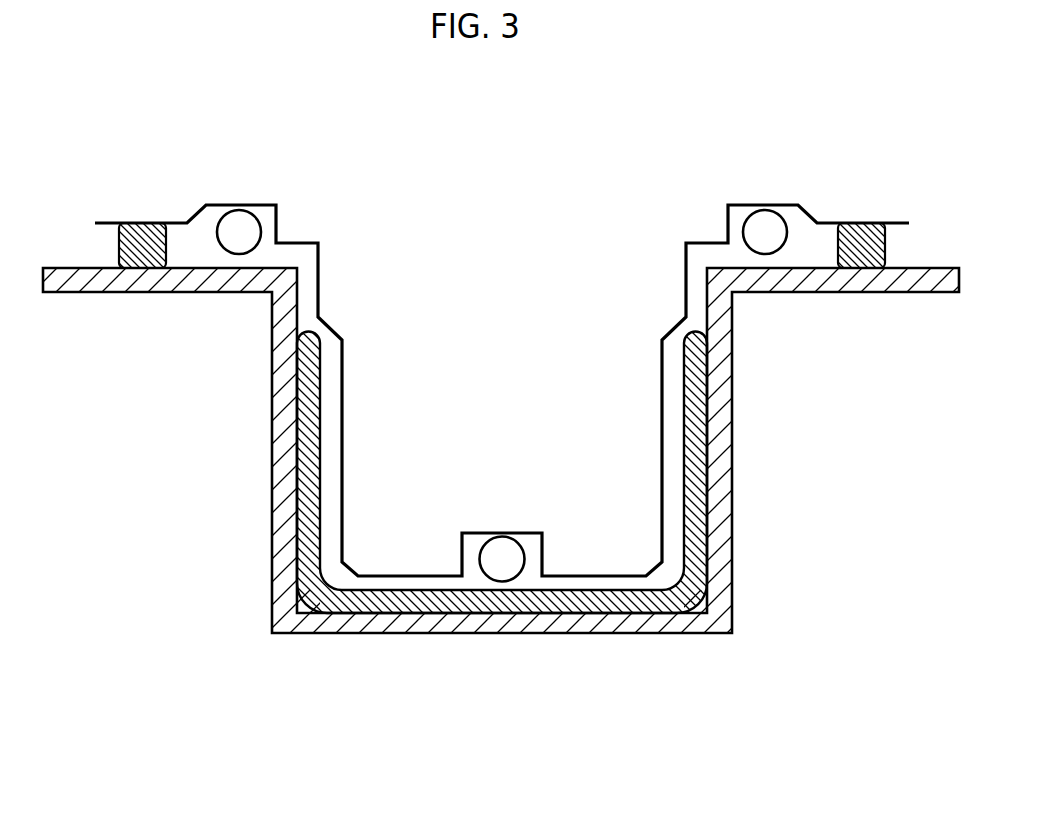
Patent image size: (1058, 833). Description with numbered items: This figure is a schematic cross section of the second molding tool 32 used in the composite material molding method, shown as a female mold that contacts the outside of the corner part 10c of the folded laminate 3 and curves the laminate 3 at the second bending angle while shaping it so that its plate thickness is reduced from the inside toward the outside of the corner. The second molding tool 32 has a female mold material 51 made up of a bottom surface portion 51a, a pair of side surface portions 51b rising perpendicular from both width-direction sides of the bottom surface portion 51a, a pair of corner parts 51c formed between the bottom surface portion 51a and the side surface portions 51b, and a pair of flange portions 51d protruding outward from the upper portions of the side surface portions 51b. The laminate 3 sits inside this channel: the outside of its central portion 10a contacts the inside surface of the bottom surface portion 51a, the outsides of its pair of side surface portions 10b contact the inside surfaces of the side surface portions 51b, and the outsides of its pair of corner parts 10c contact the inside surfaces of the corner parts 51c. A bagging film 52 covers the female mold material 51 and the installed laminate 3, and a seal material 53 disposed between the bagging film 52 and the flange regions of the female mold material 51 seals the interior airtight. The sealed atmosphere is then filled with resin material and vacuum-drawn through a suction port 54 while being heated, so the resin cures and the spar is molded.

The laminate 3 is at (417, 602).
The central portion 10a is at (577, 600).
The side surface portions 10b is at (305, 410).
The corner parts 10c is at (310, 600).
The second molding tool 32 is at (540, 708).
The female mold material 51 is at (627, 623).
The bottom surface portion 51a is at (493, 623).
The side surface portions 51b is at (285, 480).
The corner parts 51c is at (283, 617).
The flange portions 51d is at (100, 283).
The bagging film 52 is at (708, 242).
The seal material 53 is at (142, 225).
The suction port 54 is at (220, 210).